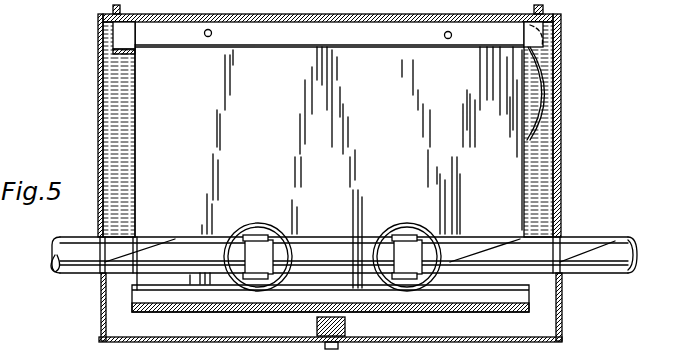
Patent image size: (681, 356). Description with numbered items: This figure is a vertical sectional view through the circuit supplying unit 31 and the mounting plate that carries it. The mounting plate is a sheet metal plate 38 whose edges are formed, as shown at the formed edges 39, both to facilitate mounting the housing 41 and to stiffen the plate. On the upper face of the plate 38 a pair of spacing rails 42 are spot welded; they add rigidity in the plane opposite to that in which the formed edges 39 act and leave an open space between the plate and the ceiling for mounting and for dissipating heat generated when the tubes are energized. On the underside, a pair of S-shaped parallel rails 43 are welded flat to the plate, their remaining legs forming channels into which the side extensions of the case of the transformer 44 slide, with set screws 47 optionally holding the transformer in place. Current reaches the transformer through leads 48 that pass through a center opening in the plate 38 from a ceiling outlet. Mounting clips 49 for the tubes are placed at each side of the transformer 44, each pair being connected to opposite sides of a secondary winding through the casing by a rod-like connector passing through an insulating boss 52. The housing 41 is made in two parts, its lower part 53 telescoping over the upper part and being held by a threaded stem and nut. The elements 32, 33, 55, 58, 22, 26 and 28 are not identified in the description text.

The circuit supplying unit 31 is at (570, 164).
The cover 32 is at (8, 48).
The tube 33 is at (55, 245).
The mounting plate 38 is at (271, 12).
The formed edges 39 is at (113, 56).
The housing 41 is at (98, 130).
The spacing rails 42 is at (120, 8).
The parallel rails 43 is at (378, 47).
The transformer 44 is at (345, 188).
The set screws 47 is at (206, 39).
The leads 48 is at (553, 84).
The mounting clips 49 is at (262, 236).
The insulating boss 52 is at (373, 252).
The lower part of housing 53 is at (101, 313).
The mounting block 55 is at (345, 325).
The nut 58 is at (325, 345).
The base 22 is at (150, 349).
The support 26 is at (534, 351).
The bracket 28 is at (594, 355).